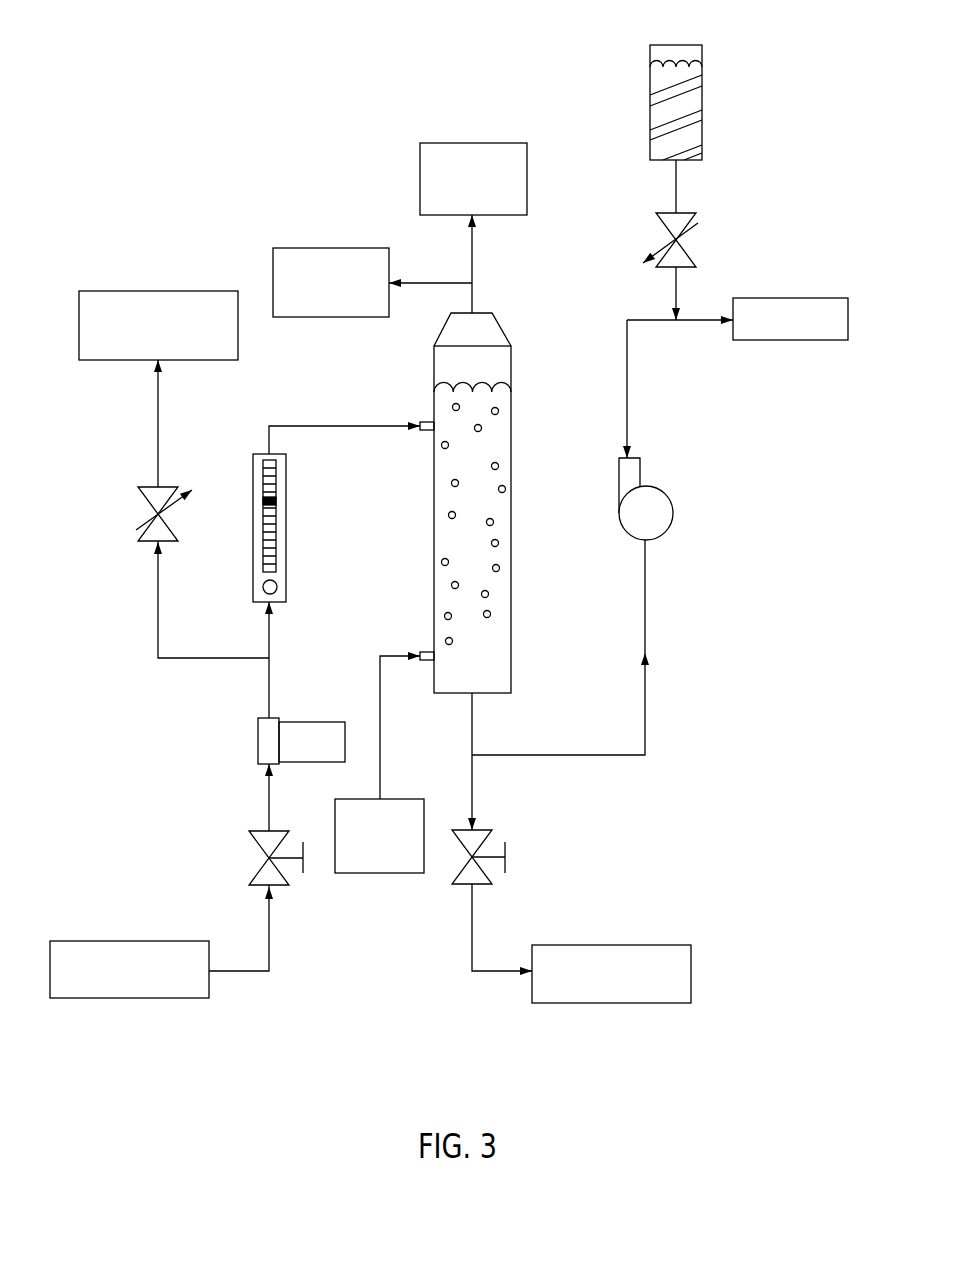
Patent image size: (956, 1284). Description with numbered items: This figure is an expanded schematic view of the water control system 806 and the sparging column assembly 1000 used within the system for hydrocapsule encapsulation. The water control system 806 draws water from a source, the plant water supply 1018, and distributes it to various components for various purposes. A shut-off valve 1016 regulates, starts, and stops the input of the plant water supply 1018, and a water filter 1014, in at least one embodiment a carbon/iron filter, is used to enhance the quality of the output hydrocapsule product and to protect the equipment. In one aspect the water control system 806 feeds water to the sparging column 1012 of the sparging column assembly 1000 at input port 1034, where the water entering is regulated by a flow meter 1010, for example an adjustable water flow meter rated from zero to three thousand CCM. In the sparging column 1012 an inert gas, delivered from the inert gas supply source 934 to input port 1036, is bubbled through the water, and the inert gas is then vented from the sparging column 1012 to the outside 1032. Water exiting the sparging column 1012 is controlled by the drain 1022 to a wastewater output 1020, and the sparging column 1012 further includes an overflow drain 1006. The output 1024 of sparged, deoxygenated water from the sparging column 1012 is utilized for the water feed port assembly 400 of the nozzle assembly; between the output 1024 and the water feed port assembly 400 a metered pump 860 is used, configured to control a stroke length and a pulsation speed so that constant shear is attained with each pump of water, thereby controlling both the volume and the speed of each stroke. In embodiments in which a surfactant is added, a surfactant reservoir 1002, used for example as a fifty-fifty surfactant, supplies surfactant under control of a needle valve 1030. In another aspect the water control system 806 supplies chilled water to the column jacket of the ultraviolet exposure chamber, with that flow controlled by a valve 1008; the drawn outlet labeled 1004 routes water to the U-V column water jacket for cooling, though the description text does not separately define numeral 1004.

The sparging column assembly 1000 is at (353, 34).
The water control system 806 is at (117, 802).
The surfactant reservoir 1002 is at (639, 102).
The outlet to U-V column water jacket for cooling 1004 is at (158, 307).
The overflow drain 1006 is at (322, 264).
The valve 1008 is at (132, 495).
The flow meter 1010 is at (305, 528).
The sparging column 1012 is at (435, 503).
The water filter 1014 is at (266, 732).
The shut-off valve 1016 is at (241, 840).
The plant water supply 1018 is at (129, 951).
The wastewater output 1020 is at (611, 955).
The drain 1022 is at (506, 838).
The output 1024 is at (560, 647).
The needle valve 1030 is at (645, 221).
The outside 1032 is at (463, 161).
The input port 1034 is at (391, 409).
The input port 1036 is at (391, 639).
The water feed port assembly 400 is at (775, 330).
The metered pump 860 is at (670, 496).
The inert gas supply source 934 is at (392, 817).